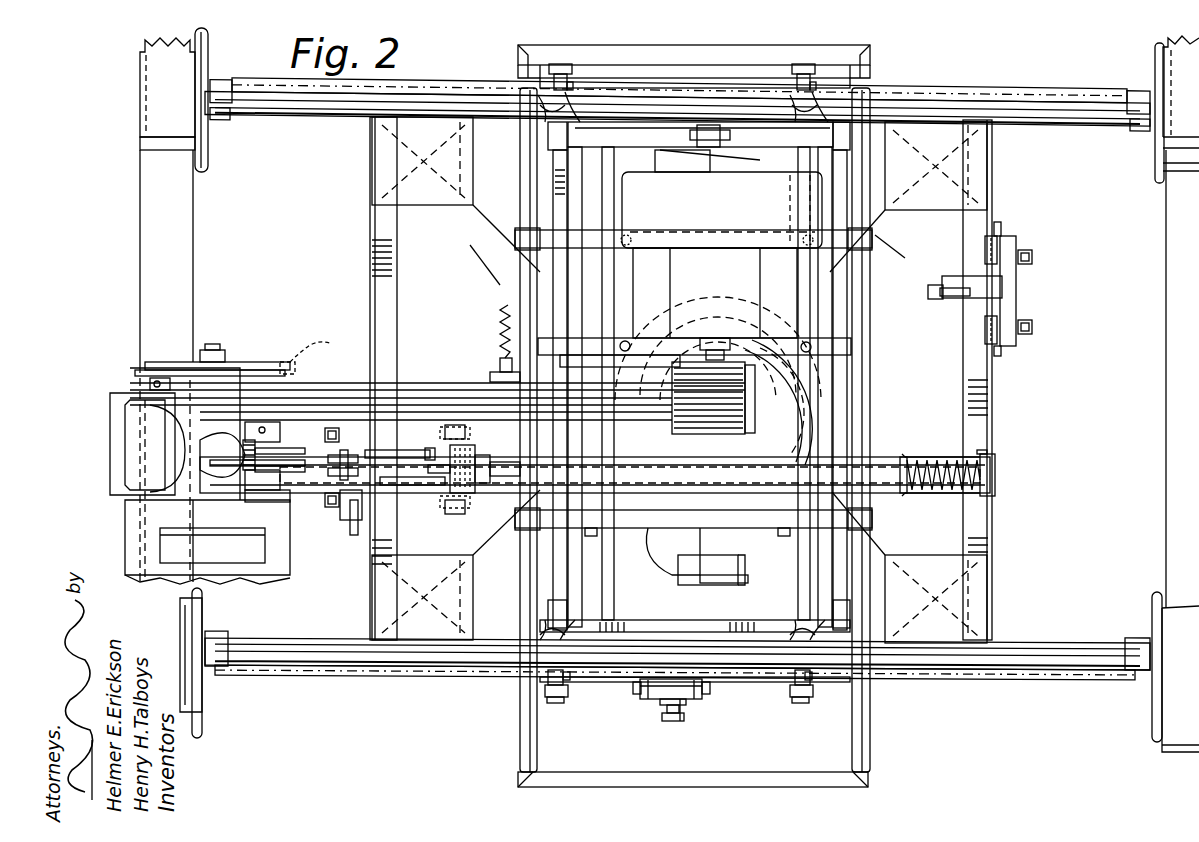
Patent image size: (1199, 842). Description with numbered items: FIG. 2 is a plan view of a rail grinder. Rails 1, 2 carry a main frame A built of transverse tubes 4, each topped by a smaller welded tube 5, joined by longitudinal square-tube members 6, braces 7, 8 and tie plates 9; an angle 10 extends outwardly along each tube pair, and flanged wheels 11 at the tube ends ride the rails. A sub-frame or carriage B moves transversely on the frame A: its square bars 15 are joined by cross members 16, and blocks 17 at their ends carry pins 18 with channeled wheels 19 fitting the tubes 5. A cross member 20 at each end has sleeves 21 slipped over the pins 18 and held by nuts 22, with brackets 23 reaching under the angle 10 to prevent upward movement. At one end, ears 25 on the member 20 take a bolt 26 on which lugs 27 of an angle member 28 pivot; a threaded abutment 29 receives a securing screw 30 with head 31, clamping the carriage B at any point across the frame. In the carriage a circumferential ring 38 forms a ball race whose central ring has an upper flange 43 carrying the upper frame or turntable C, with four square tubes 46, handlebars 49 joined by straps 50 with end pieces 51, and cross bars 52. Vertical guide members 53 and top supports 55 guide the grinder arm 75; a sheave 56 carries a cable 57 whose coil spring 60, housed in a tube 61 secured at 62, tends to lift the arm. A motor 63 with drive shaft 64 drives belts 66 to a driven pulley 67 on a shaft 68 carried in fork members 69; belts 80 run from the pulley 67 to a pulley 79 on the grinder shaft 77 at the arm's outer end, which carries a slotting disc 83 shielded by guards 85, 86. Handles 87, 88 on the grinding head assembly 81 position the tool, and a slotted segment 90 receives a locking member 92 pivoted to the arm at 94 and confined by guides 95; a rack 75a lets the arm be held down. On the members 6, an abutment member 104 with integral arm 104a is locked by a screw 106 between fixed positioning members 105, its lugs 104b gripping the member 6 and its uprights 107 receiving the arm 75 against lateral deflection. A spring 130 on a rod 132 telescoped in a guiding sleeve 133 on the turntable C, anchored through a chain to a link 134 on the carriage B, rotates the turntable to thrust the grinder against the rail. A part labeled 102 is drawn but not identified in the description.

The rail 1 is at (150, 226).
The rail 2 is at (1166, 275).
The transversely extending tube 4 is at (305, 116).
The smaller tube 5 is at (282, 104).
The longitudinally extending member 6 is at (370, 252).
The transversely extending brace 7 is at (878, 222).
The transversely extending brace 8 is at (473, 213).
The tie plate 9 is at (435, 200).
The angle 10 is at (254, 82).
The rail engaging flanged wheel 11 is at (153, 95).
The frame member 15 is at (570, 198).
The cross member 16 is at (650, 130).
The block 17 is at (568, 165).
The pin 18 is at (553, 703).
The channeled wheel 19 is at (575, 120).
The cross member 20 is at (662, 92).
The sleeve 21 is at (568, 82).
The securing nut 22 is at (558, 64).
The securing bracket 23 is at (793, 84).
The ear 25 is at (646, 692).
The pin or bolt 26 is at (660, 699).
The ear or lug 27 is at (650, 702).
The angle member 28 is at (684, 705).
The screw threaded abutment member 29 is at (672, 713).
The securing screw 30 is at (674, 721).
The manipulating head 31 is at (684, 721).
The circumferential ring 38 is at (792, 392).
The upper flange 43 is at (800, 408).
The horizontal square tube member 46 is at (592, 230).
The handlebar or tube 49 is at (523, 156).
The strap 50 is at (518, 238).
The connecting end piece 51 is at (645, 52).
The cross bar 52 is at (822, 438).
The guide member 53 is at (442, 432).
The top support 55 is at (480, 432).
The sheave 56 is at (450, 458).
The supporting cable 57 is at (503, 485).
The coil spring 60 is at (928, 458).
The tube 61 is at (940, 495).
The abutment 62 is at (997, 470).
The motor 63 is at (640, 210).
The drive shaft 64 is at (705, 350).
The belt 66 is at (742, 388).
The driven pulley 67 is at (745, 376).
The shaft 68 is at (700, 520).
The fork member 69 is at (745, 575).
The grinder arm 75 is at (420, 460).
The rack 75a is at (430, 485).
The grinder shaft 77 is at (213, 350).
The pulley 79 is at (215, 420).
The belt 80 is at (428, 415).
The assembly 81 is at (182, 462).
The slotting disc 83 is at (260, 352).
The guard 85 is at (292, 560).
The guard 86 is at (305, 354).
The handle 87 is at (112, 437).
The handle 88 is at (243, 562).
The segment 90 is at (246, 452).
The locking member 92 is at (312, 475).
The pivot 94 is at (352, 455).
The lateral guide 95 is at (295, 450).
The bolt 102 is at (592, 538).
The abutment member 104 is at (1010, 248).
The arm 104a is at (975, 295).
The lug 104b is at (1000, 240).
The fixed positioning member 105 is at (1000, 224).
The screw 106 is at (930, 295).
The upright 107 is at (1033, 257).
The spring 130 is at (502, 318).
The rod 132 is at (500, 365).
The guiding sleeve 133 is at (592, 375).
The link 134 is at (548, 134).
The main frame A is at (1003, 545).
The sub-frame or carriage B is at (680, 613).
The upper frame assembly C is at (880, 385).